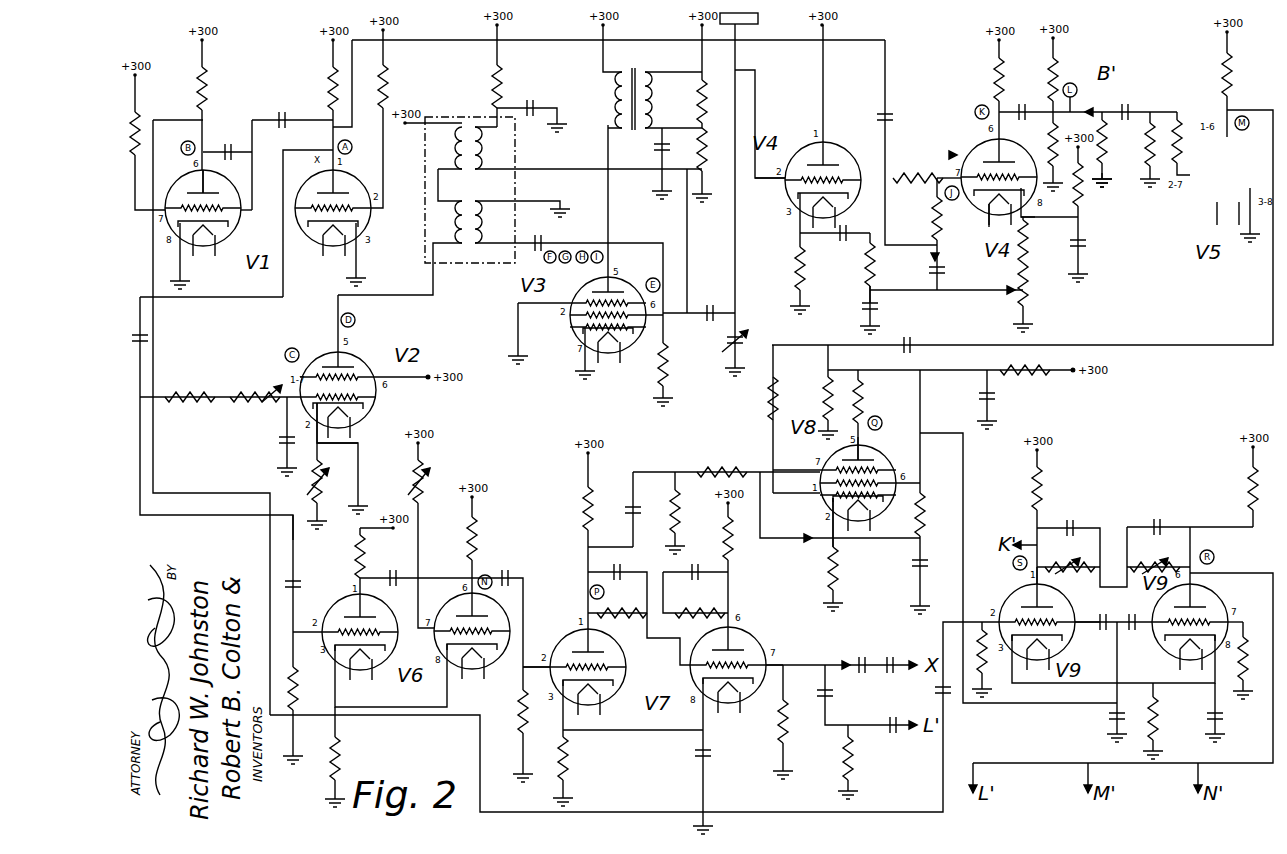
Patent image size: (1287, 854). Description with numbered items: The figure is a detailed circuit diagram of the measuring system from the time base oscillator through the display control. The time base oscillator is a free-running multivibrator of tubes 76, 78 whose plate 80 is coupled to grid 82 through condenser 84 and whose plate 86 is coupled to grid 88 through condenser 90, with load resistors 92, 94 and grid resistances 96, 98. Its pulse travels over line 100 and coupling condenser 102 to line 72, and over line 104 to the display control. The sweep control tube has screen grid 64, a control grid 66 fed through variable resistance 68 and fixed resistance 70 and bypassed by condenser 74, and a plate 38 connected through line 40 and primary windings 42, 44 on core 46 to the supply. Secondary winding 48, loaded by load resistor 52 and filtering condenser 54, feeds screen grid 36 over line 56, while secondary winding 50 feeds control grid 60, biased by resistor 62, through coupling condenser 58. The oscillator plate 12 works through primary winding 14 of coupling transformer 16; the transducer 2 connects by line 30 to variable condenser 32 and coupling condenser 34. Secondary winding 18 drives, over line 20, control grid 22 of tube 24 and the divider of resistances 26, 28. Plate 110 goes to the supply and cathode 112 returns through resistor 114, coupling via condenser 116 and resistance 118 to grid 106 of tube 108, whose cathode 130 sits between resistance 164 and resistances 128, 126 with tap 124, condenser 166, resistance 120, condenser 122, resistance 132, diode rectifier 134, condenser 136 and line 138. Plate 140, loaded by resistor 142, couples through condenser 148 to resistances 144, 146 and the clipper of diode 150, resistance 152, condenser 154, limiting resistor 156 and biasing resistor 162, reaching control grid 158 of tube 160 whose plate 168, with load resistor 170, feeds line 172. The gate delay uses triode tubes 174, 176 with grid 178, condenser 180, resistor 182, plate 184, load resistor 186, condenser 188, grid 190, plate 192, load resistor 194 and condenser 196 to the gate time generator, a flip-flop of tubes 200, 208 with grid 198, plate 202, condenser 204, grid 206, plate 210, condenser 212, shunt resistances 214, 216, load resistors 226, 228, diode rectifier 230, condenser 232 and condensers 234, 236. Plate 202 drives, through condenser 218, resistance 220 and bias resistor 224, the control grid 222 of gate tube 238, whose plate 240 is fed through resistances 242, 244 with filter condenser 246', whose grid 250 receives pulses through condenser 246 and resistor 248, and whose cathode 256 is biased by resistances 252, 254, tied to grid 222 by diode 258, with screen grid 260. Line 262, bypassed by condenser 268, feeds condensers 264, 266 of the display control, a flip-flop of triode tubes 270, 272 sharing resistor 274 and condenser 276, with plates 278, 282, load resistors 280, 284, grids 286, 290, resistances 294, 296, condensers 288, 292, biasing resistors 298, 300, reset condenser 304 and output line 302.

The transducer 2 is at (747, 20).
The plate 12 is at (615, 282).
The primary winding 14 is at (615, 100).
The coupling transformer 16 is at (637, 70).
The secondary winding 18 is at (652, 95).
The line 20 is at (758, 88).
The control grid 22 is at (790, 195).
The tube 24 is at (835, 143).
The resistance 26 is at (712, 90).
The resistance 28 is at (712, 136).
The line 30 is at (733, 222).
The variable condenser 32 is at (745, 345).
The coupling condenser 34 is at (712, 305).
The screen grid 36 is at (580, 318).
The plate 38 is at (345, 346).
The line 40 is at (437, 295).
The transformer primary winding 42 is at (455, 222).
The transformer primary winding 44 is at (455, 152).
The core 46 is at (460, 120).
The secondary winding 48 is at (485, 150).
The secondary winding 50 is at (485, 222).
The load resistor 52 is at (492, 78).
The filtering condenser 54 is at (532, 100).
The line 56 is at (685, 228).
The coupling condenser 58 is at (545, 243).
The control grid 60 is at (583, 345).
The biasing resistor 62 is at (660, 370).
The screen grid 64 is at (370, 392).
The control grid 66 is at (360, 412).
The variable resistance 68 is at (242, 390).
The fixed resistance 70 is at (177, 405).
The line 72 is at (168, 507).
The condenser 74 is at (282, 445).
The tube 76 is at (170, 182).
The tube 78 is at (315, 248).
The plate 80 is at (236, 182).
The grid 82 is at (318, 200).
The condenser 84 is at (230, 143).
The plate 86 is at (352, 190).
The grid 88 is at (235, 213).
The condenser 90 is at (280, 112).
The load resistor 92 is at (207, 84).
The load resistor 94 is at (328, 82).
The resistance 96 is at (140, 117).
The resistance 98 is at (388, 82).
The line 100 is at (225, 298).
The coupling condenser 102 is at (140, 325).
The line 104 is at (157, 365).
The grid 106 is at (1030, 198).
The tube 108 is at (955, 155).
The plate 110 is at (805, 142).
The cathode 112 is at (848, 223).
The resistor 114 is at (796, 258).
The condenser 116 is at (867, 265).
The series resistance 118 is at (912, 172).
The resistance 120 is at (876, 290).
The condenser 122 is at (878, 310).
The adjustable tap 124 is at (1005, 295).
The resistor 126 is at (1033, 305).
The resistance 128 is at (1037, 240).
The cathode 130 is at (985, 220).
The resistance 132 is at (935, 215).
The diode rectifier 134 is at (945, 270).
The condenser 136 is at (890, 112).
The line 138 is at (356, 100).
The plate 140 is at (967, 150).
The load resistor 142 is at (995, 75).
The resistance 144 is at (1058, 72).
The resistance 146 is at (1050, 150).
The coupling condenser 148 is at (1023, 103).
The diode 150 is at (1103, 118).
The resistance 152 is at (1105, 170).
The condenser 154 is at (1128, 105).
The limiting resistor 156 is at (1175, 172).
The control grid 158 is at (1195, 205).
The tube 160 is at (1210, 211).
The biasing resistor 162 is at (1147, 152).
The resistance 164 is at (1082, 205).
The condenser 166 is at (1085, 250).
The plate 168 is at (1190, 116).
The load resistor 170 is at (1232, 77).
The conductive line 172 is at (1190, 345).
The triode tube 174 is at (331, 614).
The triode tube 176 is at (418, 592).
The control grid 178 is at (376, 682).
The coupling condenser 180 is at (293, 600).
The biasing resistor 182 is at (297, 690).
The plate 184 is at (394, 587).
The load resistor 186 is at (355, 555).
The coupling condenser 188 is at (366, 566).
The control grid 190 is at (520, 700).
The plate 192 is at (460, 595).
The load resistor 194 is at (477, 542).
The coupling condenser 196 is at (510, 572).
The control grid 198 is at (645, 642).
The tube 200 is at (573, 629).
The plate 202 is at (568, 651).
The coupling condenser 204 is at (622, 571).
The control grid 206 is at (762, 660).
The tube 208 is at (779, 720).
The plate 210 is at (746, 640).
The coupling condenser 212 is at (695, 565).
The shunt resistance 214 is at (620, 603).
The shunt resistance 216 is at (688, 611).
The coupling condenser 218 is at (630, 500).
The resistance 220 is at (702, 470).
The control grid 222 is at (875, 468).
The bias resistor 224 is at (680, 507).
The load resistor 226 is at (585, 502).
The load resistor 228 is at (731, 556).
The diode rectifier 230 is at (858, 658).
The coupling condenser 232 is at (888, 655).
The condenser 234 is at (835, 692).
The condenser 236 is at (895, 735).
The tube 238 is at (830, 519).
The plate 240 is at (822, 465).
The load resistance 242 is at (1020, 378).
The load resistance 244 is at (858, 380).
The coupling condenser 246 is at (934, 335).
The filter condenser 246' is at (959, 390).
The resistor 248 is at (770, 408).
The control grid 250 is at (830, 500).
The resistance 252 is at (925, 515).
The resistance 254 is at (840, 570).
The cathode 256 is at (915, 558).
The diode 258 is at (815, 548).
The screen grid 260 is at (820, 483).
The line 262 is at (965, 478).
The condenser 264 is at (1103, 633).
The condenser 266 is at (1132, 632).
The bypass condenser 268 is at (1110, 720).
The triode tube 270 is at (1012, 610).
The triode tube 272 is at (1148, 683).
The resistor 274 is at (1158, 725).
The condenser 276 is at (1222, 722).
The plate 278 is at (1053, 600).
The load resistor 280 is at (1042, 485).
The plate 282 is at (1200, 600).
The load resistor 284 is at (1250, 485).
The control grid 286 is at (1226, 620).
The condenser 288 is at (1075, 522).
The control grid 290 is at (1062, 638).
The shunt condenser 292 is at (1162, 522).
The resistance 294 is at (1062, 564).
The resistance 296 is at (1152, 564).
The biasing resistor 298 is at (990, 703).
The biasing resistor 300 is at (1245, 688).
The line 302 is at (1240, 765).
The coupling condenser 304 is at (935, 692).